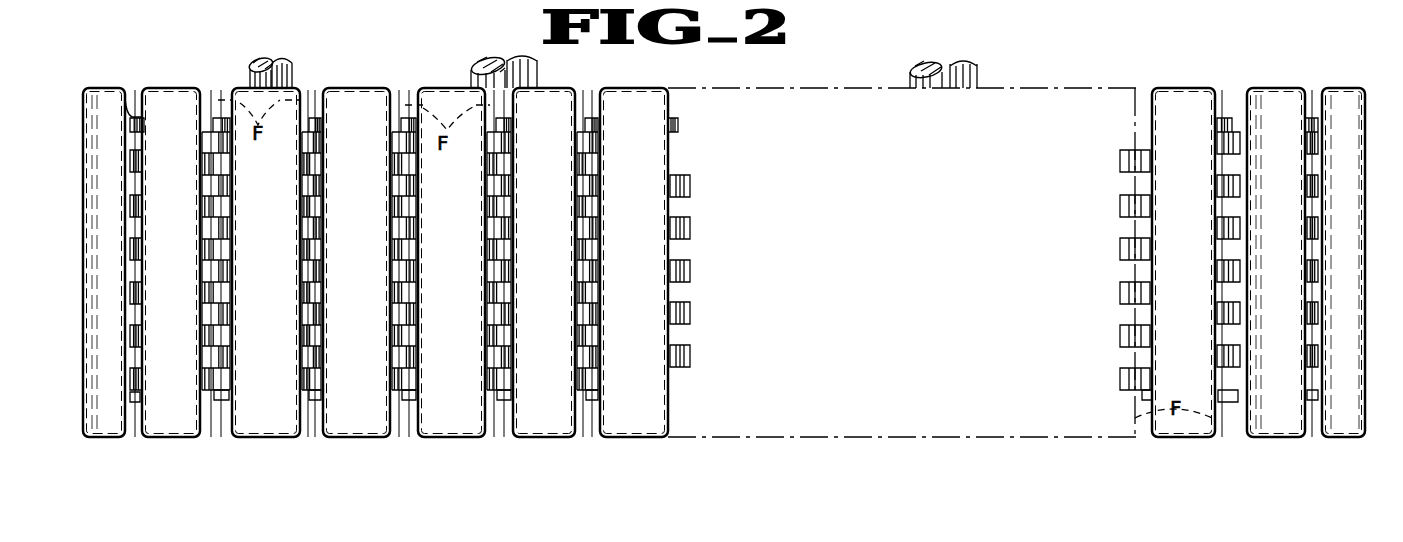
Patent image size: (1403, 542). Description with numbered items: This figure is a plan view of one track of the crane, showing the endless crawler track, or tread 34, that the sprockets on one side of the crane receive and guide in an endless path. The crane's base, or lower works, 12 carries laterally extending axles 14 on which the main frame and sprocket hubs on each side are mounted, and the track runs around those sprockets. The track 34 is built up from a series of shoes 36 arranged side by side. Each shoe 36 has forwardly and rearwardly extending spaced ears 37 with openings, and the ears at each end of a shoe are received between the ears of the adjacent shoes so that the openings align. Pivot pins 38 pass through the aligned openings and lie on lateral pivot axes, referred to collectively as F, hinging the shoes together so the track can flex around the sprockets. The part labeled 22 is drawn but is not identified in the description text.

The filter assembly 12 is at (1085, 70).
The tie bolt 14 is at (478, 61).
The tie bolt 22 is at (259, 59).
The end plate 34 is at (113, 87).
The filter plate 36 is at (365, 87).
The spacer block 37 is at (303, 205).
The connector 38 is at (298, 396).